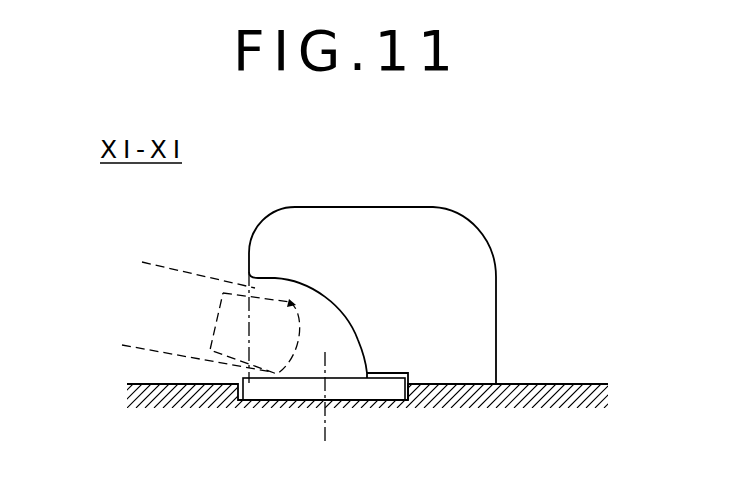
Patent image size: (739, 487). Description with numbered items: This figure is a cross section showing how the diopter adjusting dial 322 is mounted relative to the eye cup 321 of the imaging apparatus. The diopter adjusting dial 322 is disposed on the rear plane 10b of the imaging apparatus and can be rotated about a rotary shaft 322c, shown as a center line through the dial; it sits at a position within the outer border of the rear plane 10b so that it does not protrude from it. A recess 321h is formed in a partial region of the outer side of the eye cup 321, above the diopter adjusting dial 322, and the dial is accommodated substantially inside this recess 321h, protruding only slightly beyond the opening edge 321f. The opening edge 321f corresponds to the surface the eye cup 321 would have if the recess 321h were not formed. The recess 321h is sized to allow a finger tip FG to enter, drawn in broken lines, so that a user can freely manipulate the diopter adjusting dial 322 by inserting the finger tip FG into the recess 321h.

The eye cup 321 is at (375, 235).
The opening edge 321f is at (241, 272).
The recess 321h is at (206, 322).
The diopter adjusting dial 322 is at (388, 390).
The rotary shaft 322c is at (325, 433).
The rear plane 10b is at (558, 383).
The finger tip FG is at (250, 371).